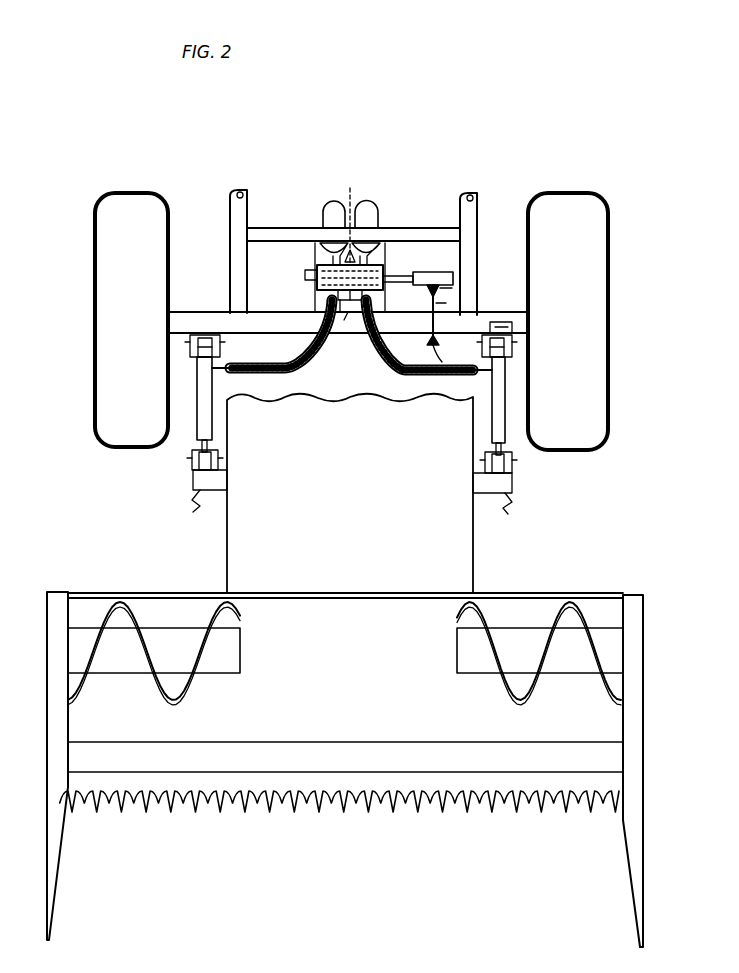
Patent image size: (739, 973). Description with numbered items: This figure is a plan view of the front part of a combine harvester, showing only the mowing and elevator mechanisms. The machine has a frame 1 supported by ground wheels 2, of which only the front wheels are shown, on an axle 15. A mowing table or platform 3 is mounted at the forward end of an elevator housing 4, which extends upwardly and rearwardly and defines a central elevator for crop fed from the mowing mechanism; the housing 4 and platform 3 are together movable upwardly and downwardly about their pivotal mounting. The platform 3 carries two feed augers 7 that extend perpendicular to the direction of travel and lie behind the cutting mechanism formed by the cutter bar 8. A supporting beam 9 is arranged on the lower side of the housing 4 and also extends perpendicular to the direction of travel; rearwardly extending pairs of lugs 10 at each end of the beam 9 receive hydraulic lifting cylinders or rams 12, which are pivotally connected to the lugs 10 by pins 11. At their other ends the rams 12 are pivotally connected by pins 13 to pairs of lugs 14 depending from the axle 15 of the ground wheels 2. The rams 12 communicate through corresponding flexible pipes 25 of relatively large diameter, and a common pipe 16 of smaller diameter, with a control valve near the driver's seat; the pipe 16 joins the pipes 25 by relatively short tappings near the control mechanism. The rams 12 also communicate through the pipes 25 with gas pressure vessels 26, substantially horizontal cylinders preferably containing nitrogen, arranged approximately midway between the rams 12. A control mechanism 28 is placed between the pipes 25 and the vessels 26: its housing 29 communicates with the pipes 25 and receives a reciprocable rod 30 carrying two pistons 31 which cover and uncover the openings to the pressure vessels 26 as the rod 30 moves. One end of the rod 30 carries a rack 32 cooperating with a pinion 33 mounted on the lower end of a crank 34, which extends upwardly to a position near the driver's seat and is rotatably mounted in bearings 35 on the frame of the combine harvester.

The frame 1 is at (250, 199).
The ground wheels 2 is at (160, 207).
The mowing table or platform 3 is at (538, 593).
The elevator housing 4 is at (228, 548).
The feed augers 7 is at (128, 603).
The cutter bar 8 is at (300, 762).
The supporting beam 9 is at (210, 492).
The lugs 10 is at (192, 500).
The pins 11 is at (192, 458).
The hydraulic lifting cylinders or rams 12 is at (200, 392).
The pins 13 is at (185, 342).
The lugs 14 is at (512, 325).
The axle 15 is at (212, 320).
The common pipe 16 is at (341, 330).
The flexible pipes 25 is at (280, 374).
The gas pressure vessels 26 is at (334, 203).
The control mechanism 28 is at (415, 265).
The housing 29 is at (317, 292).
The rod 30 is at (305, 274).
The pistons 31 is at (356, 215).
The rack 32 is at (447, 273).
The pinion 33 is at (450, 290).
The crank 34 is at (448, 306).
The bearings 35 is at (428, 290).